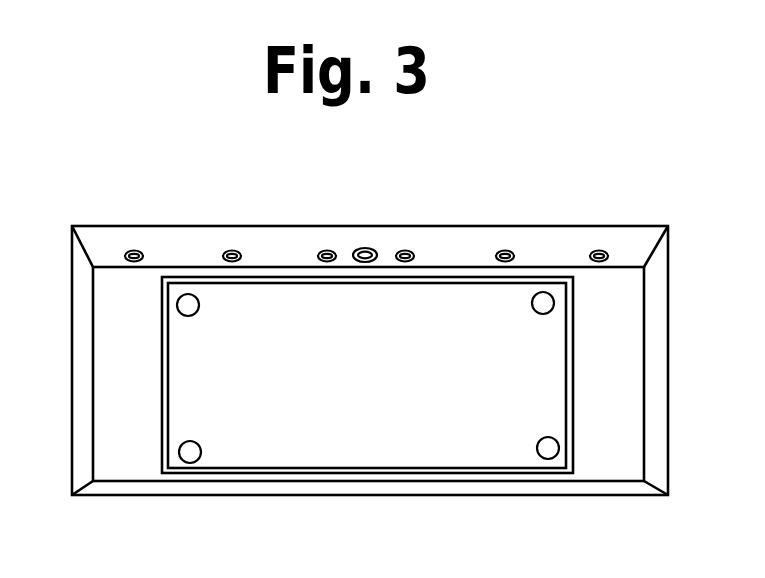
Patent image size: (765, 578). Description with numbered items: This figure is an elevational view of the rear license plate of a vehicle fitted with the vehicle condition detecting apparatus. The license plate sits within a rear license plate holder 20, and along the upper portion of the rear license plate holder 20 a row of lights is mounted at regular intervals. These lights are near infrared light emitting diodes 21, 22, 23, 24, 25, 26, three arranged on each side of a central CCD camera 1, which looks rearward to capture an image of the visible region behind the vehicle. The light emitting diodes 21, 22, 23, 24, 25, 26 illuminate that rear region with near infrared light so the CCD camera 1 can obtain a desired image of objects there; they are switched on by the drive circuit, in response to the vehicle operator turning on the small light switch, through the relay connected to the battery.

The CCD camera 1 is at (365, 248).
The rear license plate holder 20 is at (289, 440).
The near infrared light emitting diode 21 is at (135, 250).
The near infrared light emitting diode 22 is at (233, 251).
The near infrared light emitting diode 23 is at (328, 250).
The near infrared light emitting diode 24 is at (408, 250).
The near infrared light emitting diode 25 is at (513, 250).
The near infrared light emitting diode 26 is at (600, 250).